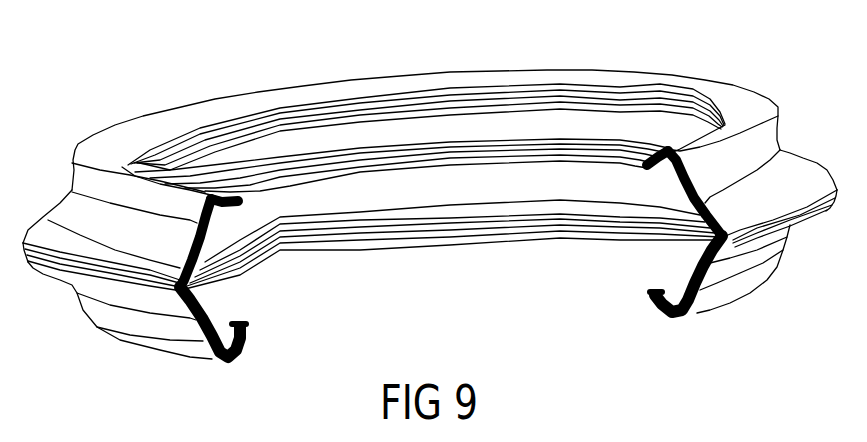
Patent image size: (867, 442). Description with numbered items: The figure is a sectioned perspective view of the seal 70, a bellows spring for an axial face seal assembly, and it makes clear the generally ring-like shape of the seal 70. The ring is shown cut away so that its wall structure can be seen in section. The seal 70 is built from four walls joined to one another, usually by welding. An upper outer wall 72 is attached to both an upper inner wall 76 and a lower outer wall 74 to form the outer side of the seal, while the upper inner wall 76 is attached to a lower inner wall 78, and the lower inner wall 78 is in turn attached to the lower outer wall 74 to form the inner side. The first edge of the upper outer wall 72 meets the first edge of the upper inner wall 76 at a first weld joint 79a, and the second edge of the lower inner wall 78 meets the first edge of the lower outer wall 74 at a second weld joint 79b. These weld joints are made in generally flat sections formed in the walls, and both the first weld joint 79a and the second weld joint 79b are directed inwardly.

The seal 70 is at (178, 86).
The upper outer wall 72 is at (746, 197).
The lower outer wall 74 is at (208, 340).
The upper inner wall 76 is at (660, 200).
The lower inner wall 78 is at (232, 305).
The first weld joint 79a is at (237, 202).
The second weld joint 79b is at (244, 326).